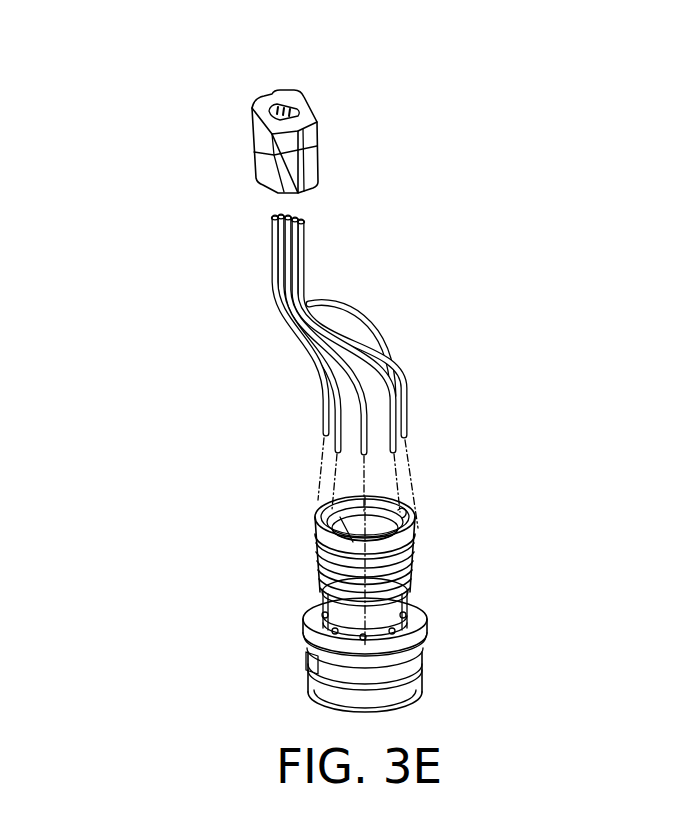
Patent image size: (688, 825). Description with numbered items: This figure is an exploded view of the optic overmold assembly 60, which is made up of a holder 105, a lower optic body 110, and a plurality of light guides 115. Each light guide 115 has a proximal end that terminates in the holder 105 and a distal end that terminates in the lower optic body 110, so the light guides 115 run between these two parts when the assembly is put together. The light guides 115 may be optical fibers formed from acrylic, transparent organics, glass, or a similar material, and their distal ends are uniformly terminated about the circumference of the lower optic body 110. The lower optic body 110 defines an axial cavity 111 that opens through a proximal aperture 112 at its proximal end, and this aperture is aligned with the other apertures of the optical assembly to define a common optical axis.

The optic overmold assembly 60 is at (201, 258).
The holder 105 is at (313, 138).
The light guides 115 is at (297, 262).
The lower optic body 110 is at (413, 571).
The axial cavity 111 is at (316, 515).
The proximal aperture 112 is at (372, 513).